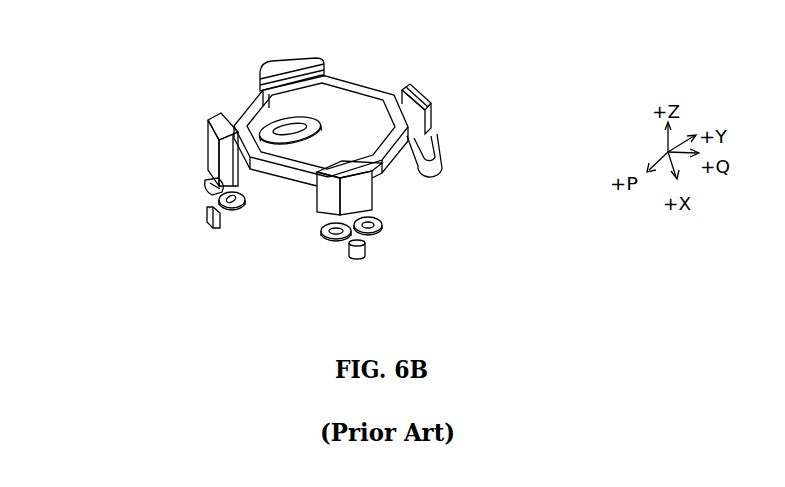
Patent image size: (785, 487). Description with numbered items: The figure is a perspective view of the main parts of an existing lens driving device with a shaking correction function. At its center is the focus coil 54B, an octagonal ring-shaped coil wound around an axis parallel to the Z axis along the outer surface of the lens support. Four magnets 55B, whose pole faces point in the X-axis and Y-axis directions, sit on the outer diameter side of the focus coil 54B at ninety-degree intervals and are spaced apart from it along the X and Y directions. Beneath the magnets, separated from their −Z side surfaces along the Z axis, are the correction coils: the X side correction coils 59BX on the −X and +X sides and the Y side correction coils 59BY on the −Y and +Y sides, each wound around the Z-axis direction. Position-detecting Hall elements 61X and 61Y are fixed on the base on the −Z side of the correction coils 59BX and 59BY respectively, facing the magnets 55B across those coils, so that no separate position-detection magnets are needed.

The focus coil 54B is at (354, 80).
The magnet 55B is at (422, 84).
The X side correction coil 59BX is at (239, 106).
The Y side correction coil 59BY is at (203, 188).
The Hall element 61X is at (358, 258).
The Hall element 61Y is at (206, 220).